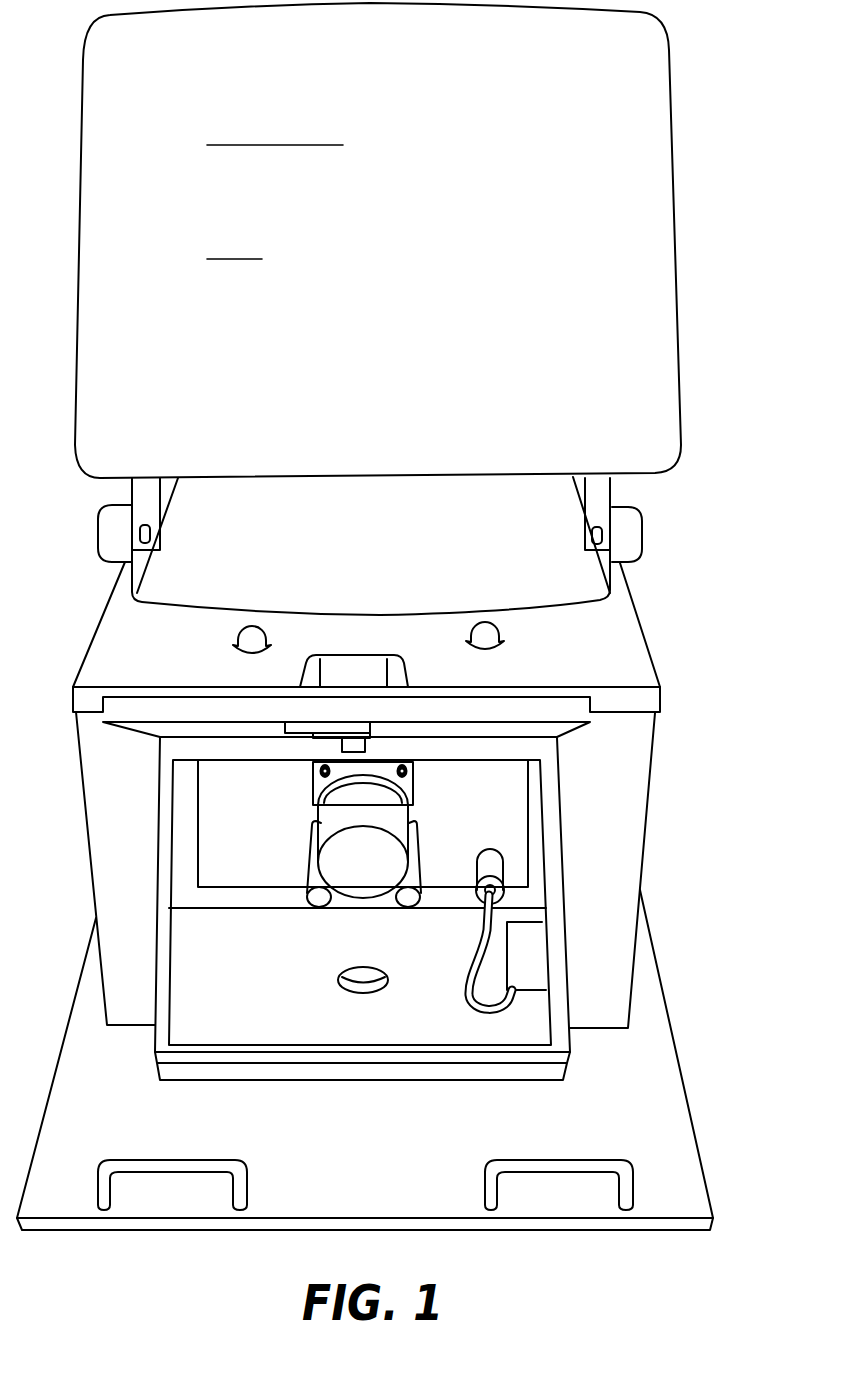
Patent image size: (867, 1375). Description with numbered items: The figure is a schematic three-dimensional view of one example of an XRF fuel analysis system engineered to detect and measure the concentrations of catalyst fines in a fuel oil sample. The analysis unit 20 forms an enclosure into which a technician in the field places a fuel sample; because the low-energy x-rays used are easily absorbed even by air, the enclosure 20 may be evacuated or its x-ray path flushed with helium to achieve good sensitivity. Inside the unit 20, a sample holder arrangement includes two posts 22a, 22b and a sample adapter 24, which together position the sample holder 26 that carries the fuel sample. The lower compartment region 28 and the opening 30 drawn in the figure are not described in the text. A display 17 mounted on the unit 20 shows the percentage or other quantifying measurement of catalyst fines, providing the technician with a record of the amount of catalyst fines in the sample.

The display 17 is at (641, 418).
The XRF analysis system 20 is at (662, 818).
The post 22a is at (313, 903).
The post 22b is at (413, 904).
The sample adapter 24 is at (313, 785).
The sample holder 26 is at (377, 881).
The sample chamber door 28 is at (418, 1013).
The drain hole 30 is at (358, 979).